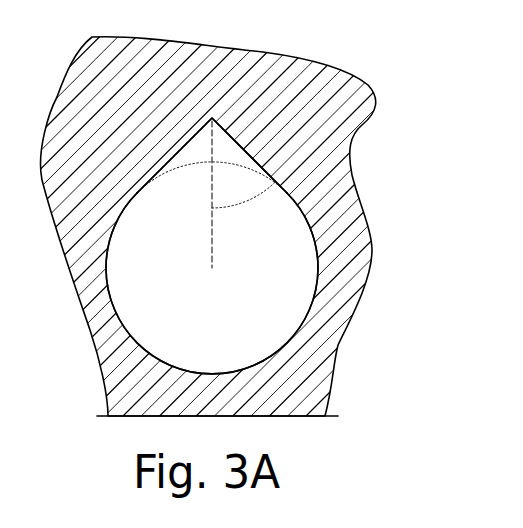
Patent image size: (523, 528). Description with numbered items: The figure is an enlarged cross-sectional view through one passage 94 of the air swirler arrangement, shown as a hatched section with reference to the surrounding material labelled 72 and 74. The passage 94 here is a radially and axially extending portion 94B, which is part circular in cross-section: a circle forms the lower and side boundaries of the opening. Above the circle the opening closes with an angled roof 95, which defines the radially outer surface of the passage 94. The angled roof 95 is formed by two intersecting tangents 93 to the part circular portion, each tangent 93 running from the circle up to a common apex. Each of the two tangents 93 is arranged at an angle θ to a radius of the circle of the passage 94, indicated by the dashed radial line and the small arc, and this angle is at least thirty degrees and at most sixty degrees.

The body 72 is at (338, 124).
The hatched section 74 is at (337, 185).
The intersecting tangents 93 is at (180, 152).
The passage 94 is at (277, 279).
The radially and axially extending portion 94B is at (294, 229).
The angled roof 95 is at (245, 139).